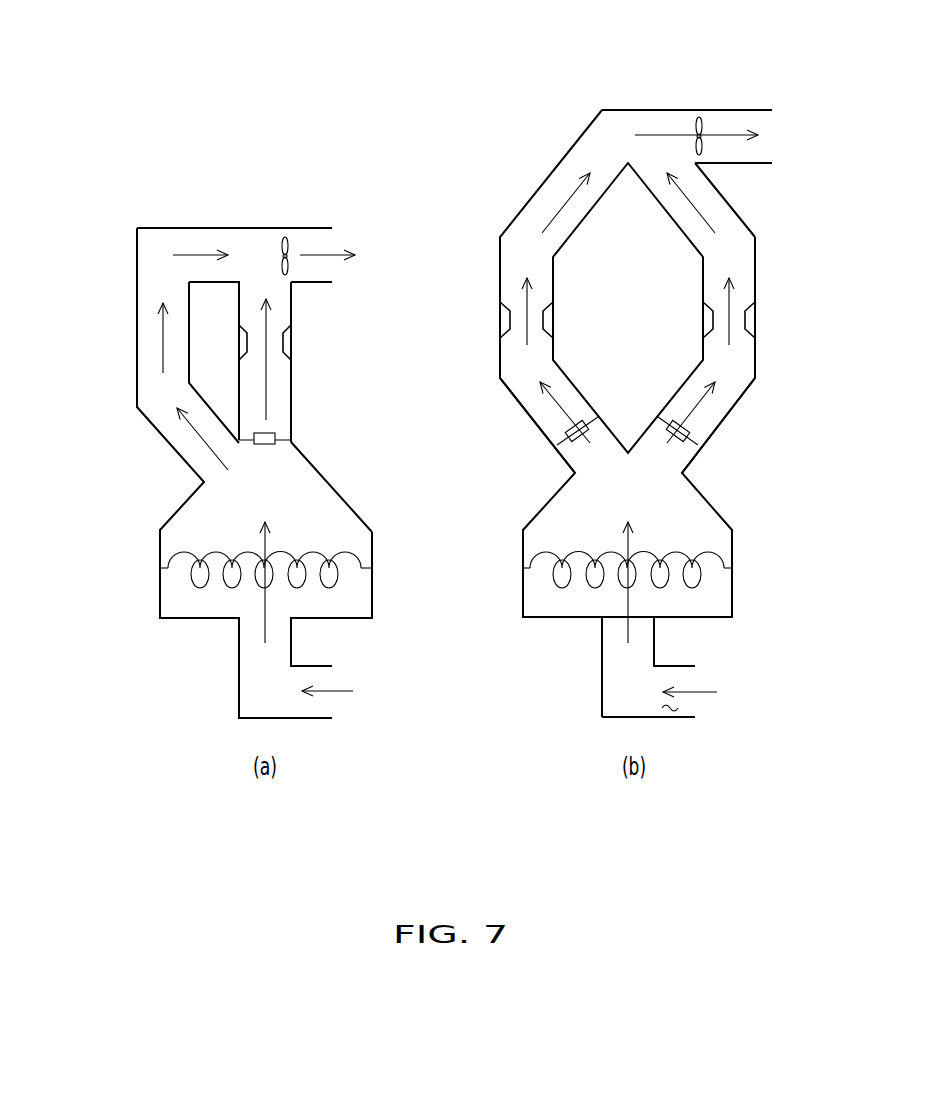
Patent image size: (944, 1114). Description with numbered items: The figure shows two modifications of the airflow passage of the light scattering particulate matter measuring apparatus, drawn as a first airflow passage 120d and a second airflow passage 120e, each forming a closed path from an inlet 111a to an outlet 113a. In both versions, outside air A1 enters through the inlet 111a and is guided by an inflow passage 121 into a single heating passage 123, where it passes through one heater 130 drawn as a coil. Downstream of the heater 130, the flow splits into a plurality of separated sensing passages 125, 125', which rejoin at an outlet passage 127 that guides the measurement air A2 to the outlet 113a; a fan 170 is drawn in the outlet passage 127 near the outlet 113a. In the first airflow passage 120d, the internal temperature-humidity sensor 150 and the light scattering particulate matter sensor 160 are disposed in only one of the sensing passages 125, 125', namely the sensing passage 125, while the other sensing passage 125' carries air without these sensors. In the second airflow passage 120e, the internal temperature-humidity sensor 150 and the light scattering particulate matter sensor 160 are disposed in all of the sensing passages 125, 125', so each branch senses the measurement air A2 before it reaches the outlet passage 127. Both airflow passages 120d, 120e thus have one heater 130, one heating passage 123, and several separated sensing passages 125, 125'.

The airflow passage 120d is at (142, 181).
The airflow passage 120e is at (532, 105).
The outlet passage 127 is at (249, 228).
The outlet 113a is at (322, 249).
The fan 170 is at (286, 236).
The sensing passage 125' is at (322, 350).
The sensing passage 125 is at (550, 355).
The light scattering particulate matter sensor 160 is at (286, 345).
The internal temperature-humidity sensor 150 is at (265, 444).
The heater 130 is at (705, 552).
The heating passage 123 is at (733, 541).
The inflow passage 121 is at (602, 677).
The inlet 111a is at (670, 719).
The outside air A1 is at (525, 693).
The measurement air A2 is at (553, 196).